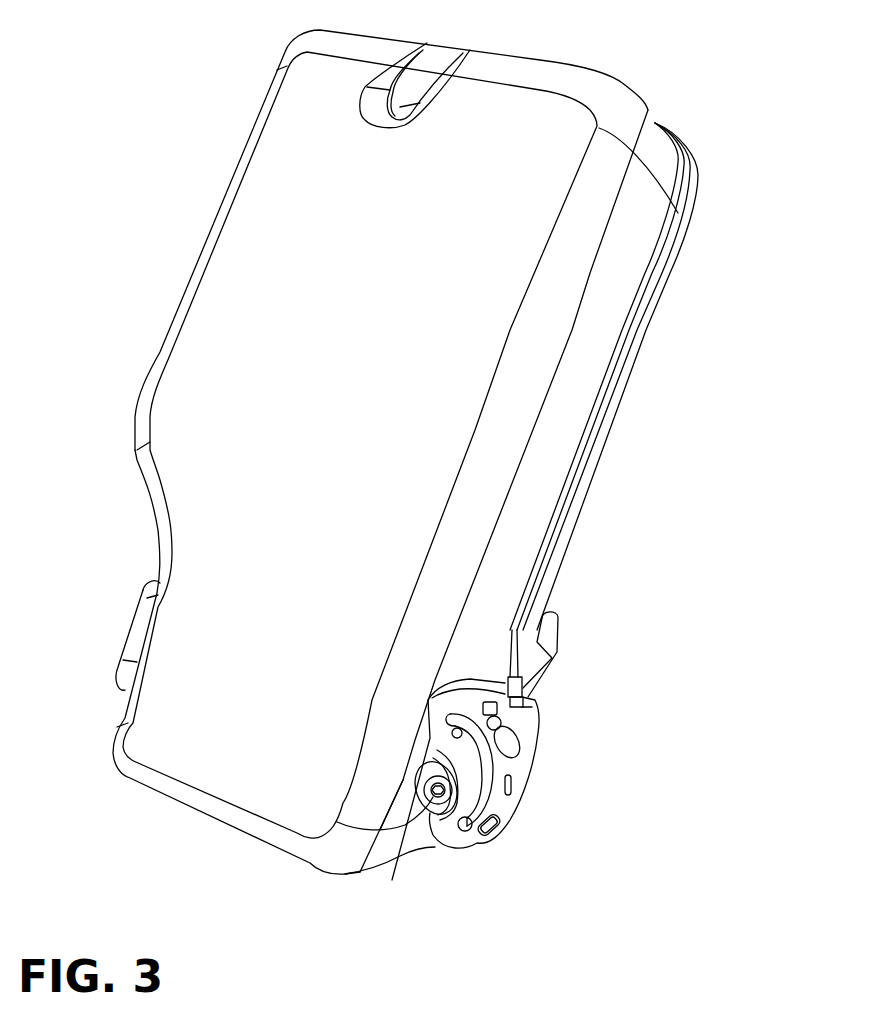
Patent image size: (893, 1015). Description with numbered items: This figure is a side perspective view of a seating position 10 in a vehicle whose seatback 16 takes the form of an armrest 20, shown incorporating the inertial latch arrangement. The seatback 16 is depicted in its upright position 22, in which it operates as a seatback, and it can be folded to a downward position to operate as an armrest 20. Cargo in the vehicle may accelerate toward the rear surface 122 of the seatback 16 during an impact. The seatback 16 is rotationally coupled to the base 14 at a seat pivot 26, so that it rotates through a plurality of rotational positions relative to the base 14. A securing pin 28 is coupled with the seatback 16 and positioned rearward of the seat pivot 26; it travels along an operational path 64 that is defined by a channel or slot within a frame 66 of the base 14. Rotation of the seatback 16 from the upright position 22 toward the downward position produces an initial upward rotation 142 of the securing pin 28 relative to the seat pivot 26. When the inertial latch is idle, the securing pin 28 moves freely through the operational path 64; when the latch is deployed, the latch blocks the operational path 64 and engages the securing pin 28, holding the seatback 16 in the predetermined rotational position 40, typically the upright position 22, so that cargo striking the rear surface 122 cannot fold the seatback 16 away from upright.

The seating position 10 is at (168, 223).
The armrest 20 is at (157, 360).
The seatback 16 is at (628, 389).
The rear surface 122 is at (678, 247).
The upright position 22 is at (622, 483).
The predetermined rotational position 40 is at (577, 645).
The operational path 64 is at (497, 767).
The seat pivot 26 is at (392, 880).
The securing pin 28 is at (465, 832).
The base 14 is at (490, 830).
The upward rotation 142 is at (557, 820).
The frame 66 is at (624, 852).